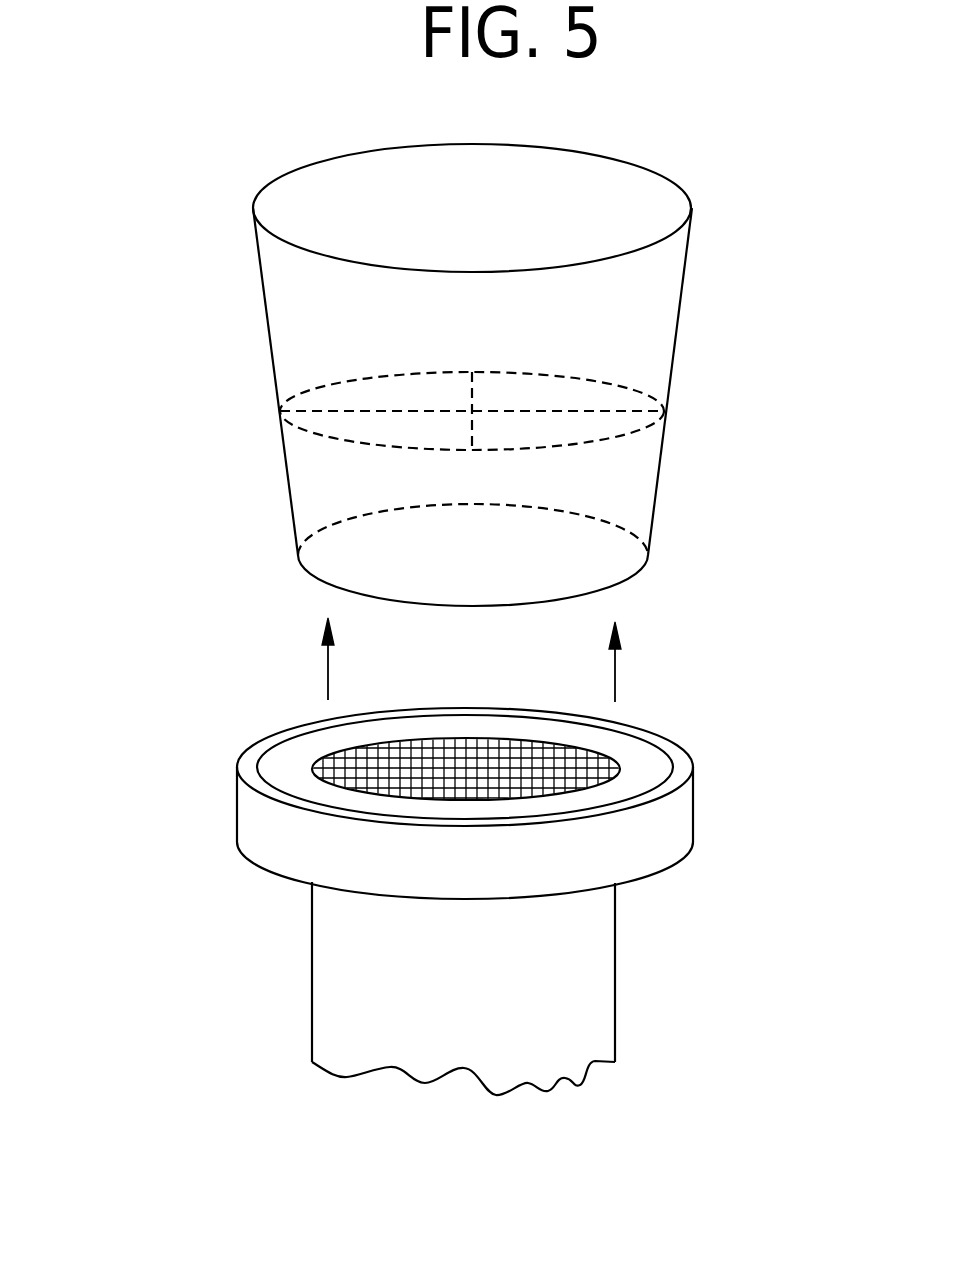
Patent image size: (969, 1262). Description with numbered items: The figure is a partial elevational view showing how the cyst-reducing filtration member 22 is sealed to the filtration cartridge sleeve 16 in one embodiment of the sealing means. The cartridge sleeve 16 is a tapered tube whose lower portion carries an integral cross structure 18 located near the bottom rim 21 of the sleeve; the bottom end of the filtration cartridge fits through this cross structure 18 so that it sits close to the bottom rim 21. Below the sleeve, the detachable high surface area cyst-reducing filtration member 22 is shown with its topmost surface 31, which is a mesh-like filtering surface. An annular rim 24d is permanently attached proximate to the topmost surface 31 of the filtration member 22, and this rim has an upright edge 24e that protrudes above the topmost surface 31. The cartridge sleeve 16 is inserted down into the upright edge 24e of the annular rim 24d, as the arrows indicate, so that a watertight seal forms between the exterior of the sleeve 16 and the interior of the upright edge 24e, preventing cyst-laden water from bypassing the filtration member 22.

The filtration cartridge sleeve 16 is at (677, 350).
The integral cross structure 18 is at (652, 404).
The bottom rim 21 is at (625, 585).
The cyst-reducing filtration member 22 is at (476, 1010).
The annular rim 24d is at (443, 788).
The upright edge 24e is at (250, 757).
The topmost surface 31 is at (620, 762).